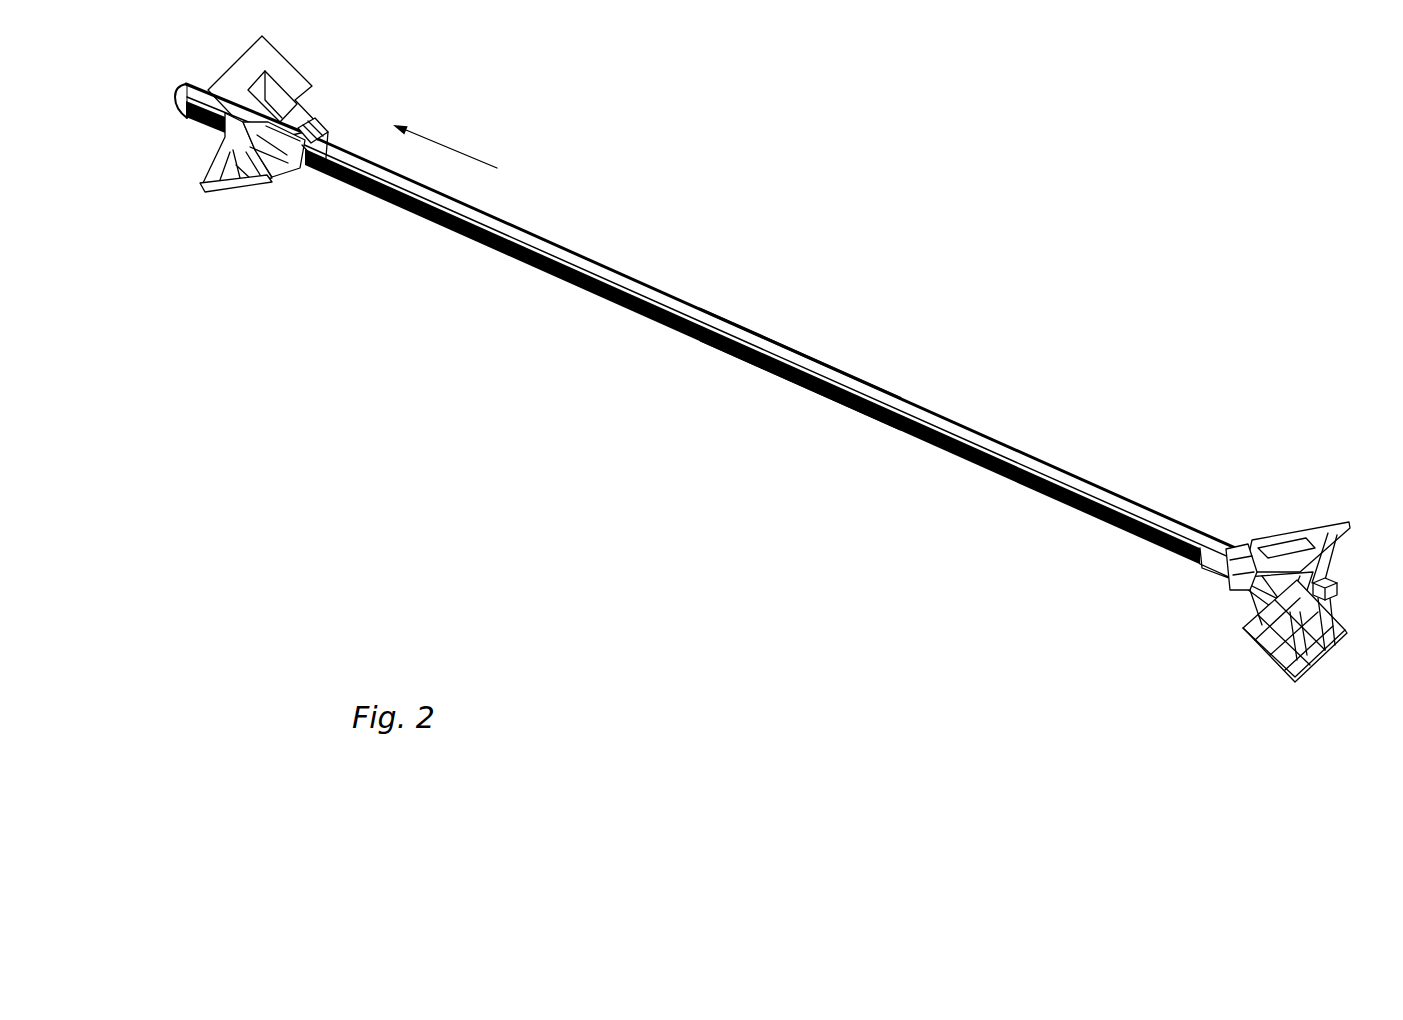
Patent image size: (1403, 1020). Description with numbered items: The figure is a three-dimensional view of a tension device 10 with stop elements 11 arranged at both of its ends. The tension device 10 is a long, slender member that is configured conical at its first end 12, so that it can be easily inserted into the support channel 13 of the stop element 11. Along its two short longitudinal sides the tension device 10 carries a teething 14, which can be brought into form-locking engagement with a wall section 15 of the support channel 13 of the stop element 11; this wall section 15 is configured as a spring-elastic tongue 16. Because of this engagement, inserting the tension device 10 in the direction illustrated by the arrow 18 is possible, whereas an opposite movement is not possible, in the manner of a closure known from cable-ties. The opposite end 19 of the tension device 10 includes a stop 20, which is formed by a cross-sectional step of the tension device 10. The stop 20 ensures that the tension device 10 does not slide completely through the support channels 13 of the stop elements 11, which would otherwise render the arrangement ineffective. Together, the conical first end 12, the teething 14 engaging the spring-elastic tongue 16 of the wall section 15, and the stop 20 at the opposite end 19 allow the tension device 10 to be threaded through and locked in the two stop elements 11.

The tension device 10 is at (887, 398).
The stop element 11 is at (336, 72).
The first end 12 is at (178, 131).
The support channel 13 is at (315, 186).
The teething 14 is at (798, 337).
The wall section 15 is at (1188, 614).
The spring-elastic tongue 16 is at (1246, 591).
The arrow 18 is at (457, 148).
The opposite end 19 is at (1280, 648).
The stop 20 is at (1357, 594).